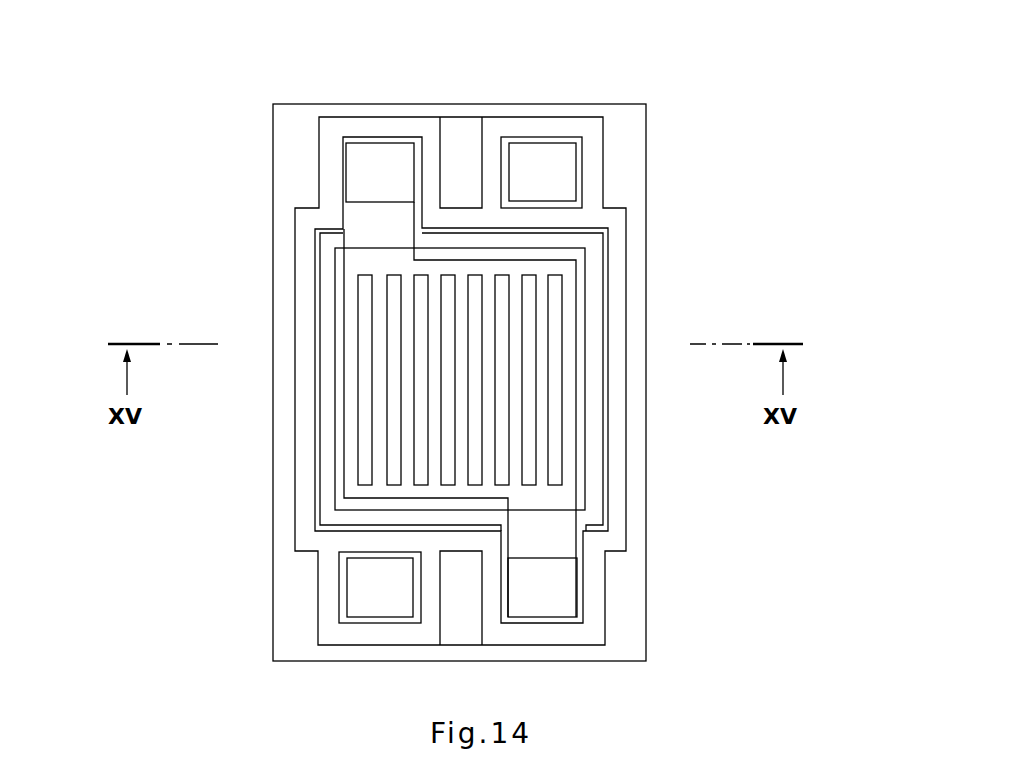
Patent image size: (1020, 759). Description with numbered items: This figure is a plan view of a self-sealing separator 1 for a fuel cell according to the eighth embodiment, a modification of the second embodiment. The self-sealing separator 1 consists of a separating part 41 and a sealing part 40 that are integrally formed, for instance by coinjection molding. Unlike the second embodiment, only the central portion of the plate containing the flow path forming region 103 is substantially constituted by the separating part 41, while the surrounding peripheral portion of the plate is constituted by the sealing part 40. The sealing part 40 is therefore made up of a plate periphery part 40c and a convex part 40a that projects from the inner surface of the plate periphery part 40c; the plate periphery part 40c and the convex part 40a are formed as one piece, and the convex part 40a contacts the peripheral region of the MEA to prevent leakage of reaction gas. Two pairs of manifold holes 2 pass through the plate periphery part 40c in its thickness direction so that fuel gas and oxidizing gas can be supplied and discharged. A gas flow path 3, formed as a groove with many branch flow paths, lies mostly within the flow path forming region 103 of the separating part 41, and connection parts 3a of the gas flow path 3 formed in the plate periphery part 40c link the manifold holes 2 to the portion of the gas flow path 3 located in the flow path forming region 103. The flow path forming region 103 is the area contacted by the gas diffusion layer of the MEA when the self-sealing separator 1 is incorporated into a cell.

The self-sealing separator 1 is at (591, 86).
The manifold holes 2 is at (391, 143).
The gas flow path 3 is at (378, 411).
The connection parts 3a is at (413, 218).
The sealing part 40 is at (131, 92).
The convex part 40a is at (303, 220).
The plate periphery part 40c is at (290, 133).
The separating part 41 is at (585, 268).
The flow path forming region 103 is at (338, 300).